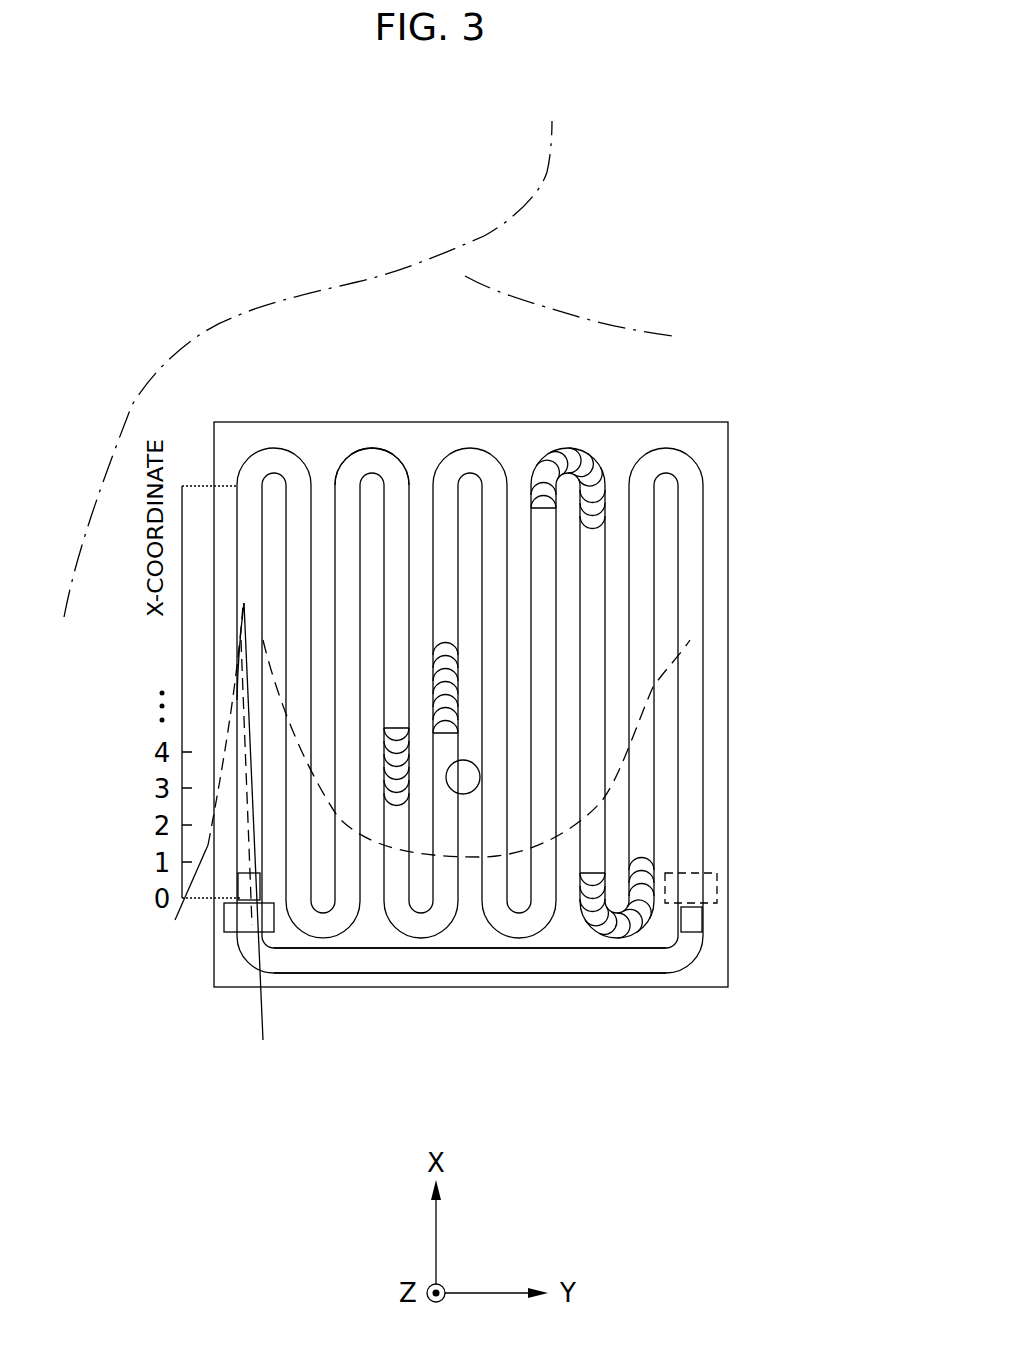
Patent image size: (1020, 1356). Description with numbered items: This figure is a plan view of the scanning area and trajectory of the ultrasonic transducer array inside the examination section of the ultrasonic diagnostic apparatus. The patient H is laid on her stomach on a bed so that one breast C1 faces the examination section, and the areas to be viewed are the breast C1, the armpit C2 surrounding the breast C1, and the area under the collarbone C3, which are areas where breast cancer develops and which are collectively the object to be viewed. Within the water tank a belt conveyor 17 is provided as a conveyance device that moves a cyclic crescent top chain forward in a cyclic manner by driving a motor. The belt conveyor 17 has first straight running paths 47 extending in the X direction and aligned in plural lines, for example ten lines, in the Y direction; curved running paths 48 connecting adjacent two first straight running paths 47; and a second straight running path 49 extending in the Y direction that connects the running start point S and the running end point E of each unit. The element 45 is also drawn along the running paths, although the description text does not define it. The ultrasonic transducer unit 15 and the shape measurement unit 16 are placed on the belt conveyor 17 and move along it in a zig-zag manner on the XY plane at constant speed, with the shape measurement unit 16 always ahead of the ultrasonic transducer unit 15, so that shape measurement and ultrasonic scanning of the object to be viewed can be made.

The ultrasonic transducer unit 15 is at (250, 935).
The shape measurement unit 16 is at (228, 906).
The belt conveyor 17 is at (708, 706).
The heat transfer medium 45 is at (573, 458).
The first straight running paths 47 is at (703, 625).
The curved running paths 48 is at (374, 449).
The second straight running path 49 is at (415, 975).
The patient H is at (232, 318).
The running start point S is at (261, 953).
The running end point E is at (679, 956).
The breast C1 is at (565, 772).
The armpit C2 is at (255, 690).
The area under the collarbone C3 is at (518, 488).